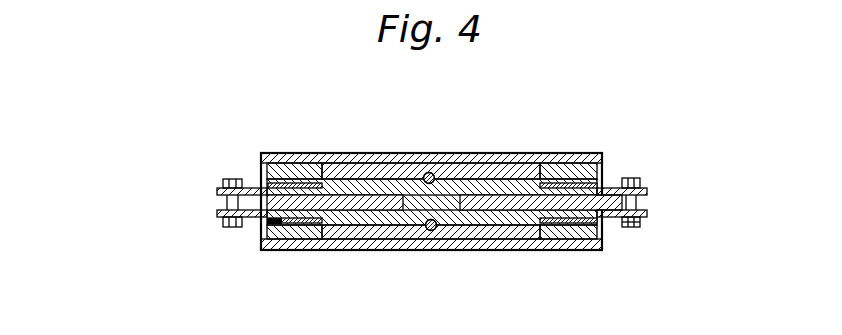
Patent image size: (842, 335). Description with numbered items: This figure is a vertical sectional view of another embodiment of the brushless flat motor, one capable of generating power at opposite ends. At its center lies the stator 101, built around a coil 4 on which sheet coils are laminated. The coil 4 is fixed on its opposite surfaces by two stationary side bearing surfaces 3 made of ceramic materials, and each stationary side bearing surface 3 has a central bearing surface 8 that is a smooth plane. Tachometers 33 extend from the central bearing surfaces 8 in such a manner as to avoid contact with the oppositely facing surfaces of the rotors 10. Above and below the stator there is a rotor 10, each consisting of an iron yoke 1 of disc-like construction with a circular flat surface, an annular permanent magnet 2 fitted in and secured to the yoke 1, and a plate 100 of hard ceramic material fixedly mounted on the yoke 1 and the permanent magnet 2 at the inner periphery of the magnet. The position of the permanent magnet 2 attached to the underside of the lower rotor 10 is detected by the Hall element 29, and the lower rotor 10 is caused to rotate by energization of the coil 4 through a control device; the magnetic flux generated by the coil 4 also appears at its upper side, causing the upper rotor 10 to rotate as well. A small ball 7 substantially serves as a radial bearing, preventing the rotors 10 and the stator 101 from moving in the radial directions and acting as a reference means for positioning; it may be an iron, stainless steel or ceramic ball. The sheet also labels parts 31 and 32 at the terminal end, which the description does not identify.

The iron yoke 1 is at (514, 153).
The permanent magnet 2 is at (594, 166).
The stationary side bearing surface 3 is at (648, 190).
The coil 4 is at (583, 200).
The small ball 7 is at (424, 174).
The central bearing surface 8 is at (480, 168).
The rotor 10 is at (439, 148).
The Hall element 29 is at (264, 240).
The bolt shank 31 is at (647, 206).
The lock nut 32 is at (632, 228).
The tachometer 33 is at (562, 182).
The plate 100 is at (348, 168).
The stator 101 is at (674, 197).